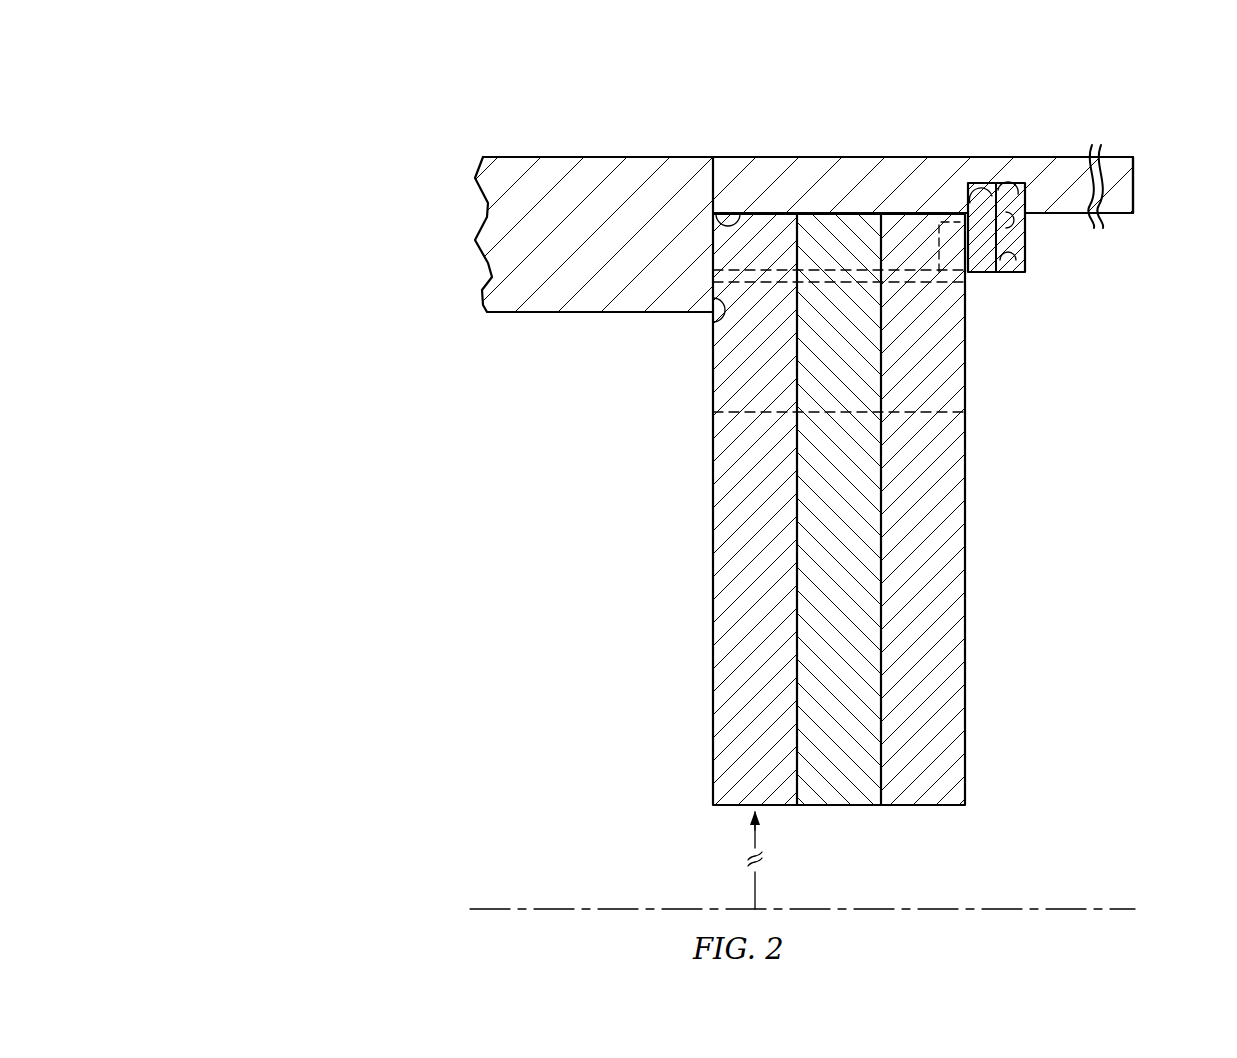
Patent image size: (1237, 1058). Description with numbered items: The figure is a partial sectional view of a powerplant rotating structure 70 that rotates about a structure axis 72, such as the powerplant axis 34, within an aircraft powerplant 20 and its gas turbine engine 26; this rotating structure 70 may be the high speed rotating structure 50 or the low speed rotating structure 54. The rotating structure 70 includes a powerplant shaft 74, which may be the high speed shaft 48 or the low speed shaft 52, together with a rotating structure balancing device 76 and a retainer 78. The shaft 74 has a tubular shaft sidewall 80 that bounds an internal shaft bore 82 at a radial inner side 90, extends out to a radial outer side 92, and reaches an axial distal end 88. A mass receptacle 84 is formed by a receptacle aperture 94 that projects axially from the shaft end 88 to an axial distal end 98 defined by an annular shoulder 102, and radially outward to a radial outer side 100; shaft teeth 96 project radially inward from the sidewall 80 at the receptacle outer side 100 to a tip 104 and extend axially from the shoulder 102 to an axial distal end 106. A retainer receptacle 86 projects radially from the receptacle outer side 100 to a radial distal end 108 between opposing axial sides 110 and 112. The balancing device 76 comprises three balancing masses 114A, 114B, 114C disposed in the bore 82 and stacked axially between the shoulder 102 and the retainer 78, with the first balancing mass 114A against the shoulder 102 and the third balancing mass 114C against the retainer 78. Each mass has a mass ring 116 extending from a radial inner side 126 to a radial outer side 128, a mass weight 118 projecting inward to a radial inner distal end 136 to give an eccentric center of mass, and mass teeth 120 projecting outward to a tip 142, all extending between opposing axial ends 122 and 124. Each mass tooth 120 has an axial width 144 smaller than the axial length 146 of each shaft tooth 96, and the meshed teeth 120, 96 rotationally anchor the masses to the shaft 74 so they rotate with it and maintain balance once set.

The aircraft powerplant 20 is at (300, 78).
The gas turbine engine 26 is at (345, 113).
The powerplant axis 34 is at (791, 860).
The structure axis 72 is at (490, 908).
The high speed shaft 48 is at (398, 278).
The low speed shaft 52 is at (398, 278).
The powerplant shaft 74 is at (483, 264).
The high speed rotating structure 50 is at (372, 168).
The low speed rotating structure 54 is at (372, 168).
The powerplant rotating structure 70 is at (468, 182).
The rotating structure balancing device 76 is at (642, 527).
The retainer 78 is at (1010, 284).
The shaft sidewall 80 is at (548, 246).
The internal shaft bore 82 is at (572, 594).
The mass receptacle 84 is at (794, 212).
The retainer receptacle 86 is at (1030, 183).
The axial distal end 88 is at (1135, 186).
The radial inner side 90 is at (507, 314).
The radial outer side 92 is at (511, 156).
The receptacle aperture 94 is at (826, 213).
The shaft teeth 96 is at (836, 277).
The axial distal end of the mass receptacle 98 is at (651, 338).
The annular shoulder 102 is at (713, 320).
The radial outer side of the mass receptacle 100 is at (727, 213).
The tip 104 is at (914, 280).
The axial distal end of the shaft tooth 106 is at (1028, 268).
The radial distal end of the retainer receptacle 108 is at (1010, 184).
The axial side of the retainer receptacle 110 is at (984, 184).
The axial side of the retainer receptacle 112 is at (1010, 228).
The first balancing mass 114A is at (708, 783).
The second balancing mass 114B is at (829, 810).
The third balancing mass 114C is at (975, 795).
The mass ring 116 is at (938, 393).
The mass weight 118 is at (938, 629).
The mass teeth 120 is at (935, 261).
The axial end of the balancing mass 122 is at (713, 497).
The axial end of the balancing mass 124 is at (797, 488).
The radial inner side of the mass ring 126 is at (965, 418).
The radial outer side of the mass ring 128 is at (966, 276).
The radial inner distal end of the mass weight 136 is at (923, 808).
The tip of the mass tooth 142 is at (906, 213).
The axial width of the mass tooth 144 is at (938, 719).
The axial length of the shaft tooth 146 is at (938, 90).